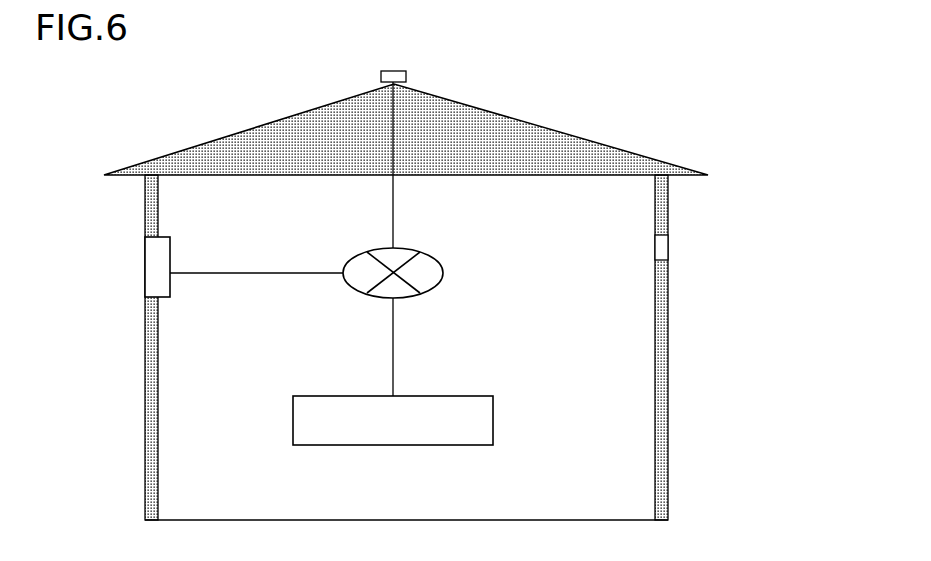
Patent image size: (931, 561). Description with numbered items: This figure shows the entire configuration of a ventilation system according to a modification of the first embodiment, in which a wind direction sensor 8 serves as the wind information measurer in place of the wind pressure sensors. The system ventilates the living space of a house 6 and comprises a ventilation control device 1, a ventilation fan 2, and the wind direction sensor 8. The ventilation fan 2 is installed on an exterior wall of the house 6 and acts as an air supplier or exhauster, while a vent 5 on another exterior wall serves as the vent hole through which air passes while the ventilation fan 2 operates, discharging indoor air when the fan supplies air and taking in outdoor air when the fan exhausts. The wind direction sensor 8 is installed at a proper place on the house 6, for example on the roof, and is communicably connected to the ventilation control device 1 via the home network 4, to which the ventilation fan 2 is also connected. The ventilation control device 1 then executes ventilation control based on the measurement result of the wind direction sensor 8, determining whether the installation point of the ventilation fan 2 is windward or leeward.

The ventilation control device 1 is at (430, 396).
The ventilation fan 2 is at (170, 238).
The home network 4 is at (439, 259).
The vent 5 is at (668, 240).
The house 6 is at (500, 108).
The wind direction sensor 8 is at (397, 71).